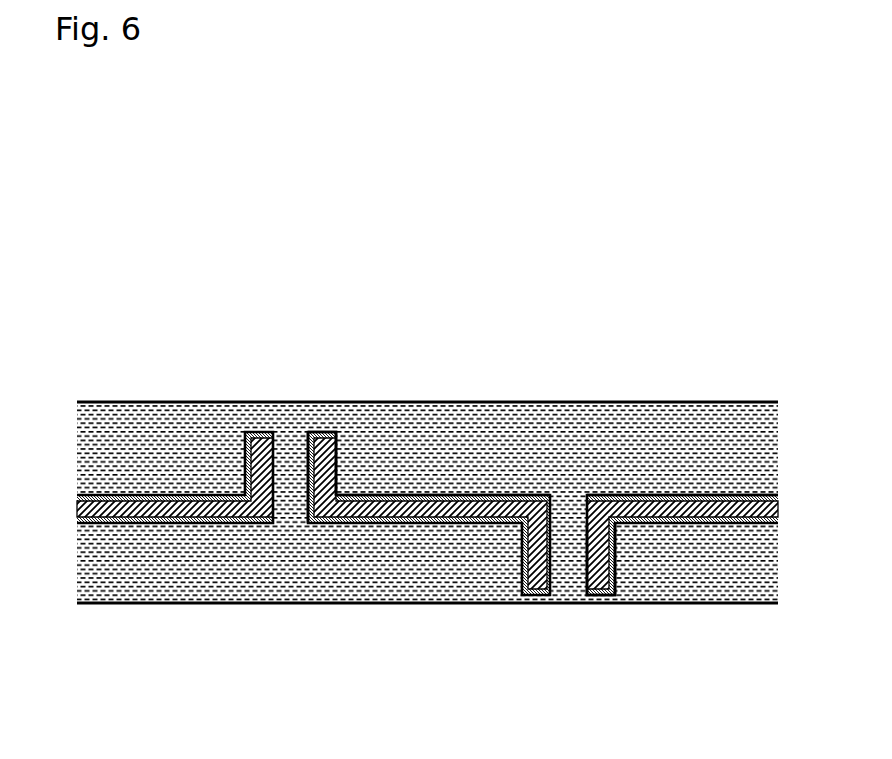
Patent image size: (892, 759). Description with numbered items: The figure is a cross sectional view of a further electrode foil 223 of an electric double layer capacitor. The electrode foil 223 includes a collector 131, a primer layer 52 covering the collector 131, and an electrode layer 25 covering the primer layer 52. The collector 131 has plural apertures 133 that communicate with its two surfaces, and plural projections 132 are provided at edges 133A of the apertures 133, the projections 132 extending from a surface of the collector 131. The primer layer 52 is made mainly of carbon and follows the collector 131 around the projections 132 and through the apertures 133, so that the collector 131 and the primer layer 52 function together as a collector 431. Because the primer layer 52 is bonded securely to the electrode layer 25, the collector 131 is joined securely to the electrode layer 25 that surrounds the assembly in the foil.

The electrode layer 25 is at (483, 427).
The primer layer 52 is at (318, 432).
The collector 131 is at (380, 497).
The projection 132 is at (246, 432).
The aperture 133 is at (293, 505).
The edge of aperture 133A is at (257, 523).
The electrode foil 223 is at (443, 506).
The collector 431 is at (545, 506).